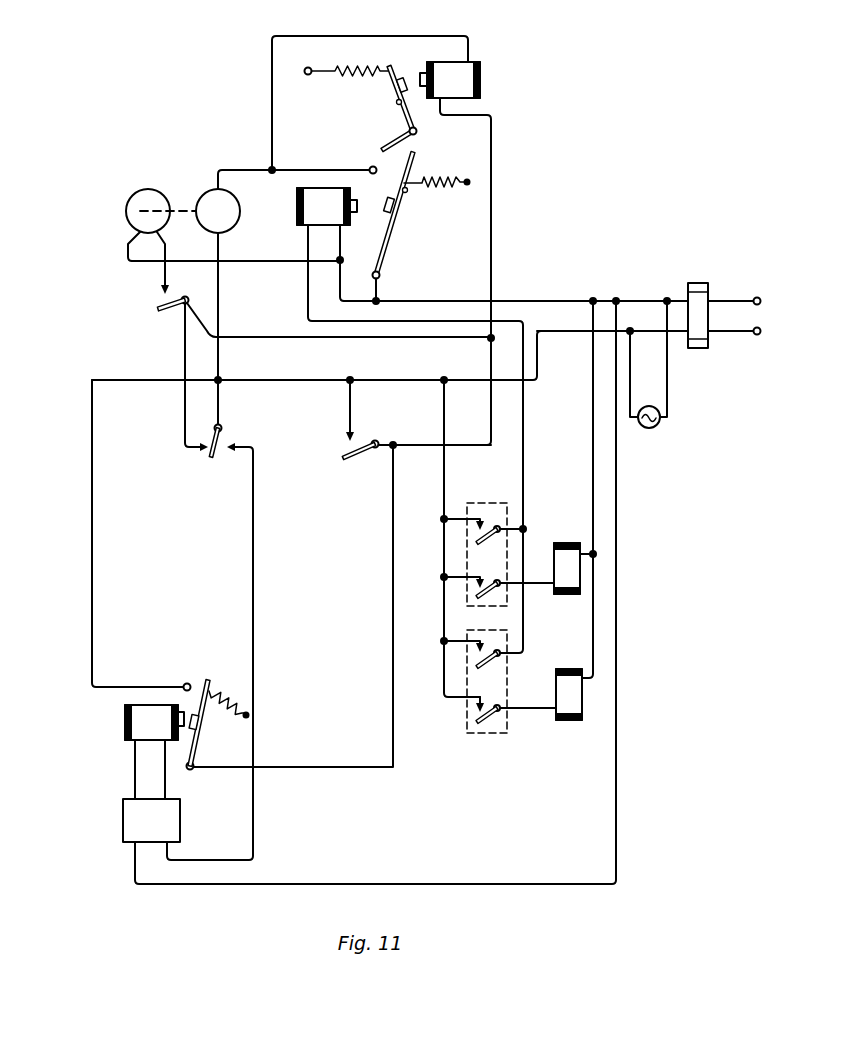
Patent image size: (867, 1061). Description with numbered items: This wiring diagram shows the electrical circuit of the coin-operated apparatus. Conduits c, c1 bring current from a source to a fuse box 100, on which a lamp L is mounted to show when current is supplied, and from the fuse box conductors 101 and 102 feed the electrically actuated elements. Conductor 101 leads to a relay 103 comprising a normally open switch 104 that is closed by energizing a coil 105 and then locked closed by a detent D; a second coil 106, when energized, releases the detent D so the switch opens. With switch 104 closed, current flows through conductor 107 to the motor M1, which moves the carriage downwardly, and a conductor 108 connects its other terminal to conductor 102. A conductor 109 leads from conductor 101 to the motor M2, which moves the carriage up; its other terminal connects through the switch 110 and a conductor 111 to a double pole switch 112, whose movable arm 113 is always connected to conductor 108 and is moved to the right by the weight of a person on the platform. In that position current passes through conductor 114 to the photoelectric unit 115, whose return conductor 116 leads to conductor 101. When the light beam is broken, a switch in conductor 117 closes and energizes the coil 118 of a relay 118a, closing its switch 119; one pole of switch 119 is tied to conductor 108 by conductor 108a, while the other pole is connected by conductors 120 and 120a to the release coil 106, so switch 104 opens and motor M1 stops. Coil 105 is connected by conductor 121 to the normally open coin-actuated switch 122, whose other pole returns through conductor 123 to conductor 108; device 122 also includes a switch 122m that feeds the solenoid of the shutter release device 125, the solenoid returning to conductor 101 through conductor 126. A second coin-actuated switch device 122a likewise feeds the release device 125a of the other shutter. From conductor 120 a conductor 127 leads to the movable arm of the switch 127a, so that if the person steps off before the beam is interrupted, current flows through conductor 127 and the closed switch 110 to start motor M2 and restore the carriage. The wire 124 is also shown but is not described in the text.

The fuse box 100 is at (706, 270).
The conductor 101 is at (640, 294).
The conductor 102 is at (638, 335).
The relay 103 is at (500, 160).
The normally open switch 104 is at (372, 134).
The coil 105 is at (300, 214).
The coil 106 is at (481, 78).
The conductor 107 is at (298, 170).
The conductor 108 is at (288, 382).
The conductor 108a is at (91, 618).
The conductor 109 is at (243, 263).
The switch 110 is at (172, 312).
The conductor 111 is at (184, 436).
The double pole switch 112 is at (200, 454).
The movable arm 113 is at (223, 441).
The conductor 114 is at (252, 493).
The photoelectric unit 115 is at (112, 823).
The conductor 116 is at (345, 884).
The conductor 117 is at (166, 782).
The coil 118 is at (143, 705).
The relay 118a is at (110, 736).
The switch 119 is at (205, 672).
The conductor 120 is at (321, 768).
The conductor 120a is at (492, 268).
The conductor 121 is at (524, 442).
The coin-actuated switch device 122 is at (515, 506).
The coin actuated switch device 122a is at (518, 638).
The normally open switch 122m is at (483, 570).
The conductor 123 is at (446, 492).
The conductor 124 is at (379, 36).
The release device 125 is at (566, 536).
The release device 125a is at (570, 668).
The conductor 126 is at (600, 598).
The conductor 127 is at (386, 440).
The switch 127a is at (359, 460).
The electric motor M1 is at (255, 202).
The electric motor M2 is at (172, 178).
The lamp L is at (658, 424).
The detent D is at (388, 142).
The conduit c is at (732, 301).
The conduit c1 is at (722, 333).